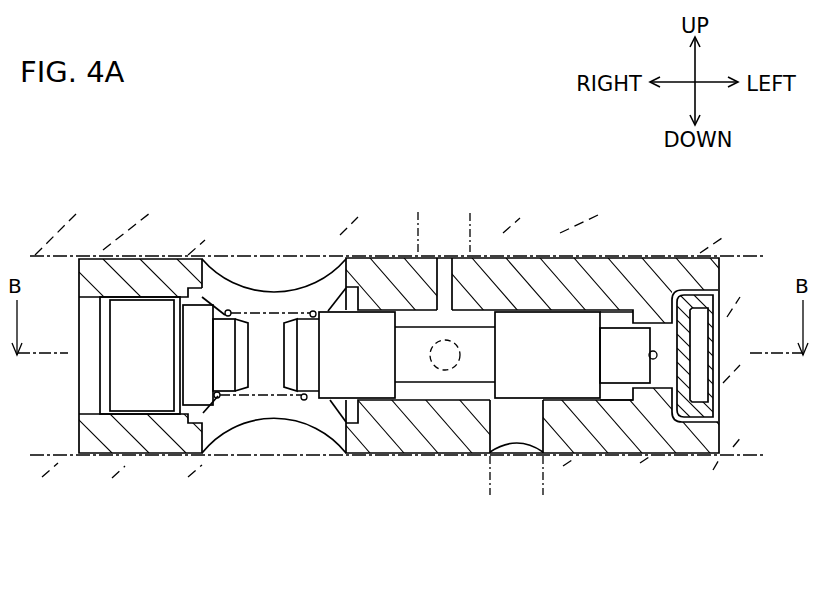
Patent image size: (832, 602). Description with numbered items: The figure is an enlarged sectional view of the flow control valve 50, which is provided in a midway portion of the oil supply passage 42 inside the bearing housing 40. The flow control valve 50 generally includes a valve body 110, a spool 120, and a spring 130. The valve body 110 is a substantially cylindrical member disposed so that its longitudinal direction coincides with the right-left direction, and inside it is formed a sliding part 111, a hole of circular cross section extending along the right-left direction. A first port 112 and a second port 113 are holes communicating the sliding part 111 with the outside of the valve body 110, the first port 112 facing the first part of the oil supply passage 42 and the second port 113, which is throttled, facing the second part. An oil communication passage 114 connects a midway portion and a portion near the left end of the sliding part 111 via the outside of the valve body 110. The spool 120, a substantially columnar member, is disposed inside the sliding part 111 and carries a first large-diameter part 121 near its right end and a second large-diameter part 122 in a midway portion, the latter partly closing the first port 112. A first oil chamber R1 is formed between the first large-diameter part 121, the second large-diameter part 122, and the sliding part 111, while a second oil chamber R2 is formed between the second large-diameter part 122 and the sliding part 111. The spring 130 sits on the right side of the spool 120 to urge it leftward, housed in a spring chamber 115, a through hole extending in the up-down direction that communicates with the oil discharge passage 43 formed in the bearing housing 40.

The flow control valve 50 is at (93, 144).
The bearing housing 40 is at (118, 253).
The oil supply passage 42 is at (516, 553).
The oil discharge passage 43 is at (318, 478).
The valve body 110 is at (382, 264).
The sliding part 111 is at (409, 389).
The first port 112 is at (530, 455).
The second port 113 is at (437, 258).
The oil communication passage 114 is at (457, 372).
The spring chamber 115 is at (237, 271).
The spool 120 is at (475, 336).
The first large-diameter part 121 is at (343, 369).
The second large-diameter part 122 is at (533, 369).
The spring 130 is at (254, 398).
The first oil chamber R1 is at (423, 315).
The second oil chamber R2 is at (624, 314).